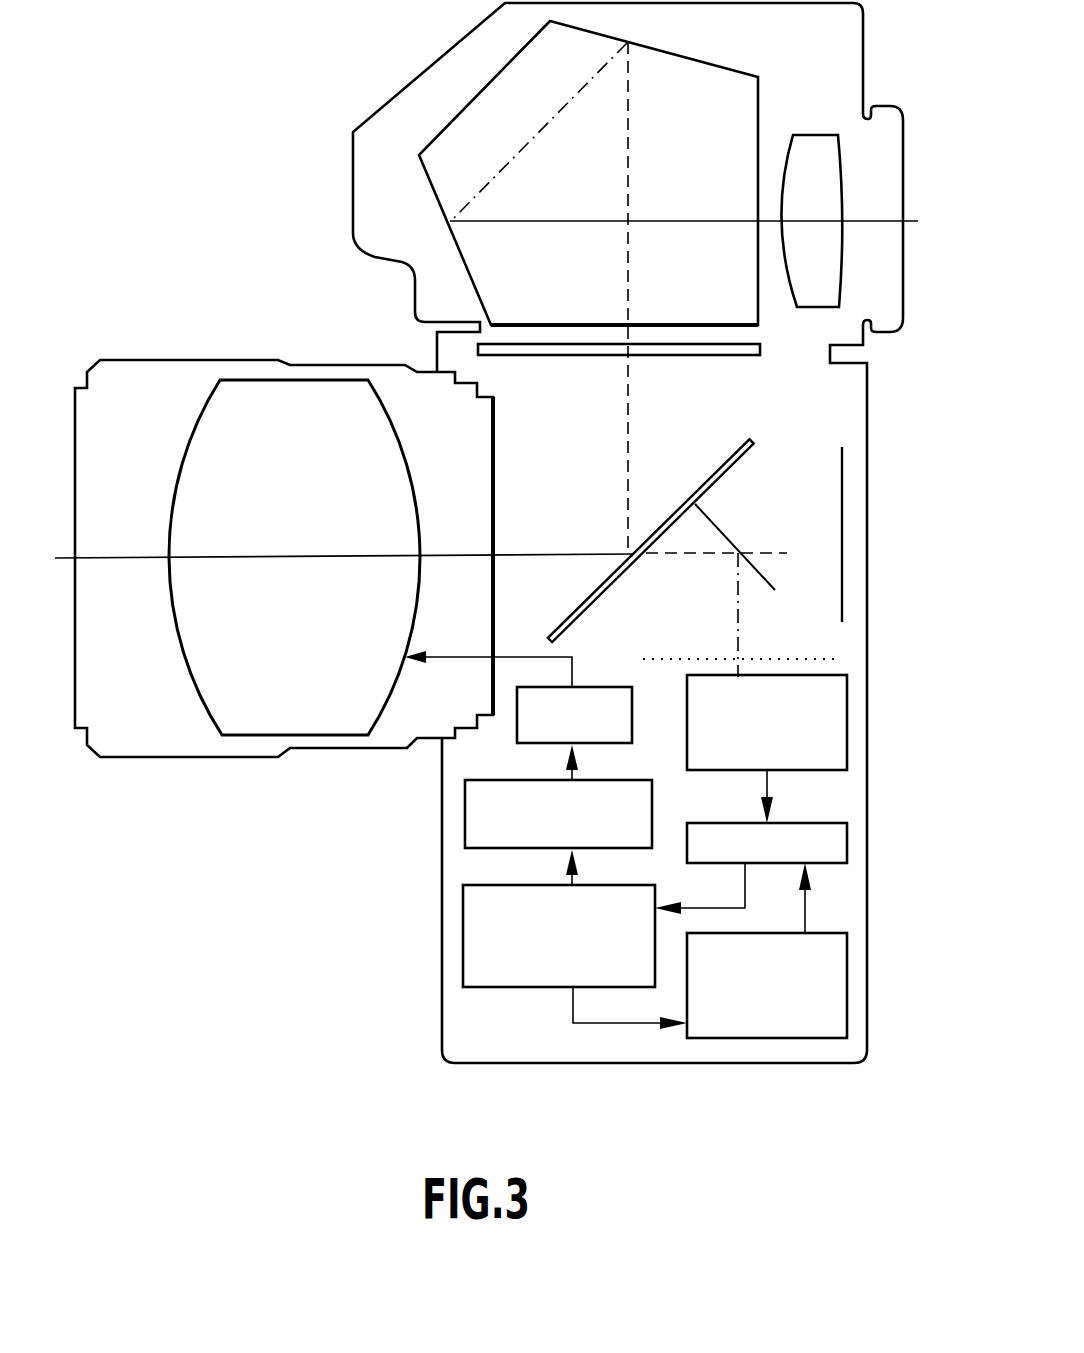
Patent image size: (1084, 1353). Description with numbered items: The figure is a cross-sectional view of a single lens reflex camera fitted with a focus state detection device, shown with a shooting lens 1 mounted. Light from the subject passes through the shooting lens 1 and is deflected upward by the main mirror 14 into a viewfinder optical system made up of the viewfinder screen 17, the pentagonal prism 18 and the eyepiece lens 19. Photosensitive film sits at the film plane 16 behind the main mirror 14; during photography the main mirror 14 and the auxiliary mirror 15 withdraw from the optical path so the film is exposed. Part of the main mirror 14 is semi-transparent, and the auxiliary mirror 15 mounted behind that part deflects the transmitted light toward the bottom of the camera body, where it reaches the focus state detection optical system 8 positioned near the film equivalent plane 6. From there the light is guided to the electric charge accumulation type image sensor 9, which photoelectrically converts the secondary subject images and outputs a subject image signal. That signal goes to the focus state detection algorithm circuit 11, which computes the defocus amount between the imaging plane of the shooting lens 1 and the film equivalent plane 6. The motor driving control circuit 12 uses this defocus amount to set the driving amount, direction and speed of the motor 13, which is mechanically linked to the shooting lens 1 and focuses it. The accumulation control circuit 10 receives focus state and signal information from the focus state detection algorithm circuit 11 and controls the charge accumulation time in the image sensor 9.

The shooting lens 1 is at (188, 758).
The film equivalent plane 6 is at (800, 658).
The focus state detection optical system 8 is at (848, 720).
The image sensor 9 is at (848, 845).
The accumulation control circuit 10 is at (850, 973).
The focus state detection algorithm circuit 11 is at (463, 967).
The motor driving control circuit 12 is at (465, 827).
The motor 13 is at (608, 680).
The main mirror 14 is at (705, 478).
The auxiliary mirror 15 is at (780, 588).
The film plane 16 is at (840, 502).
The viewfinder screen 17 is at (700, 355).
The pentagonal prism 18 is at (762, 88).
The eyepiece lens 19 is at (812, 308).